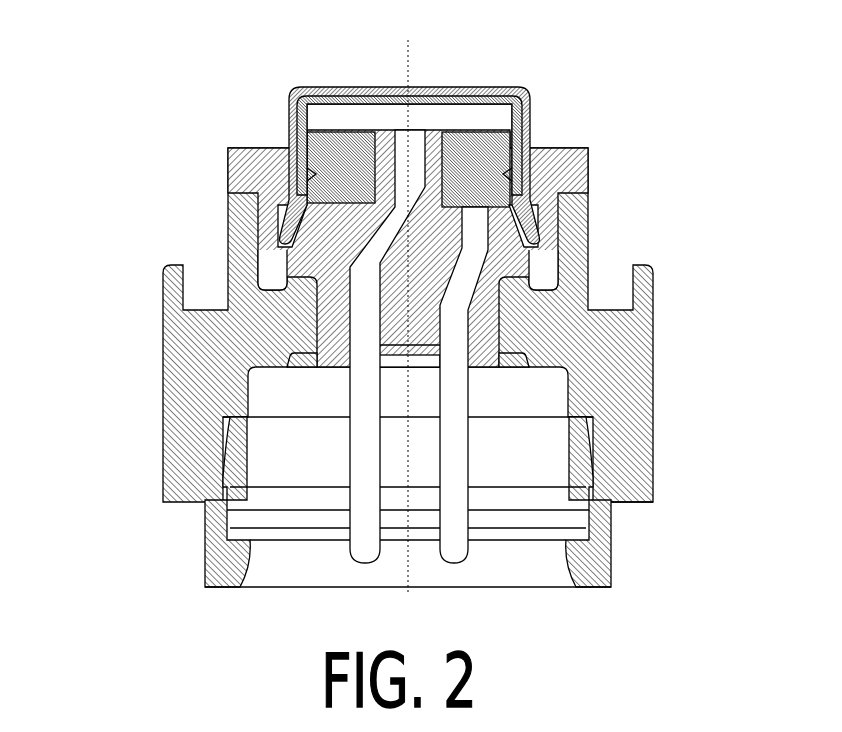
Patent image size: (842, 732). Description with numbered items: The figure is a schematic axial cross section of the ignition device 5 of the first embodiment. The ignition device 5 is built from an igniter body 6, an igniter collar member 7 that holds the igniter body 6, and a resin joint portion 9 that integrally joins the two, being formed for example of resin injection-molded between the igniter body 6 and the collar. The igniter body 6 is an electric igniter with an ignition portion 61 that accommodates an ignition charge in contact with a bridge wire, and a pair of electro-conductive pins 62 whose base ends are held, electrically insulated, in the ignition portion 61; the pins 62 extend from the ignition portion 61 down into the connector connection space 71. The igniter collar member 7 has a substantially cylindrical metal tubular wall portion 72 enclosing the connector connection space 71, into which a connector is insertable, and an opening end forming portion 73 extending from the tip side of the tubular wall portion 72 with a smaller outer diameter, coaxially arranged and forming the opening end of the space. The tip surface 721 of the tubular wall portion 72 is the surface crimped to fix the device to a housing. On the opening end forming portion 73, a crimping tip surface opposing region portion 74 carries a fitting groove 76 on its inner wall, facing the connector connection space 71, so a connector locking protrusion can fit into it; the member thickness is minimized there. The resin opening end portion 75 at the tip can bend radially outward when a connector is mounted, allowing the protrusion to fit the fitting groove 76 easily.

The ignition device 5 is at (401, 324).
The igniter body 6 is at (413, 126).
The ignition portion 61 is at (340, 87).
The electro-conductive pins 62 is at (283, 242).
The igniter collar member 7 is at (401, 398).
The resin joint portion 9 is at (524, 257).
The connector connection space 71 is at (408, 434).
The tubular wall portion 72 is at (605, 358).
The tip surface 721 is at (643, 503).
The opening end forming portion 73 is at (617, 583).
The crimping tip surface opposing region portion 74 is at (205, 513).
The opening end portion 75 is at (220, 570).
The fitting groove 76 is at (222, 479).